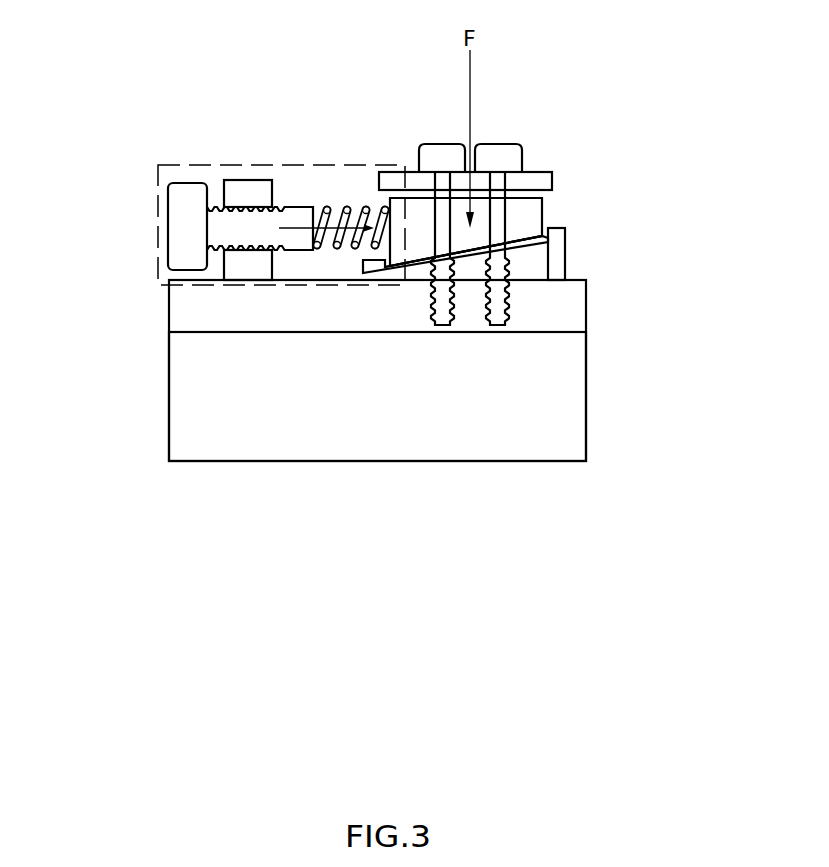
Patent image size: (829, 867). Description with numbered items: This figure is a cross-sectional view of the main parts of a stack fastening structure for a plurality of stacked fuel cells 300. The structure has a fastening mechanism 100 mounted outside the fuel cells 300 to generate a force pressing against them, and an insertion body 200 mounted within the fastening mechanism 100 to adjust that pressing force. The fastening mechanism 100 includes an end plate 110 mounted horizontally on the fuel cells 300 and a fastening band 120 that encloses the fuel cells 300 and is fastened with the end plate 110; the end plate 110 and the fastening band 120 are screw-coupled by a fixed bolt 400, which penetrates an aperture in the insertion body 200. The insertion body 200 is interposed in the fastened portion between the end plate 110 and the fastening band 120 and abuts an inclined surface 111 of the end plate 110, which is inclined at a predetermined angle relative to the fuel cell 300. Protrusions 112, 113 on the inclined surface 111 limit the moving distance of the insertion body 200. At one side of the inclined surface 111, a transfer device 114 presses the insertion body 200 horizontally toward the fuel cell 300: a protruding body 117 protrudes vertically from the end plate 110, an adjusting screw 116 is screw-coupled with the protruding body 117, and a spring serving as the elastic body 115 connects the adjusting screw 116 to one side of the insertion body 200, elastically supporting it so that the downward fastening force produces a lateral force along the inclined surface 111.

The fastening mechanism 100 is at (683, 176).
The end plate 110 is at (580, 311).
The inclined surface 111 is at (470, 253).
The protrusion 112 is at (370, 272).
The protrusion 113 is at (588, 336).
The transfer device 114 is at (282, 165).
The elastic body 115 is at (363, 207).
The adjusting screw 116 is at (187, 253).
The protruding body 117 is at (233, 267).
The fastening band 120 is at (552, 181).
The insertion body 200 is at (420, 213).
The fuel cell 300 is at (578, 396).
The fixed bolt 400 is at (497, 144).